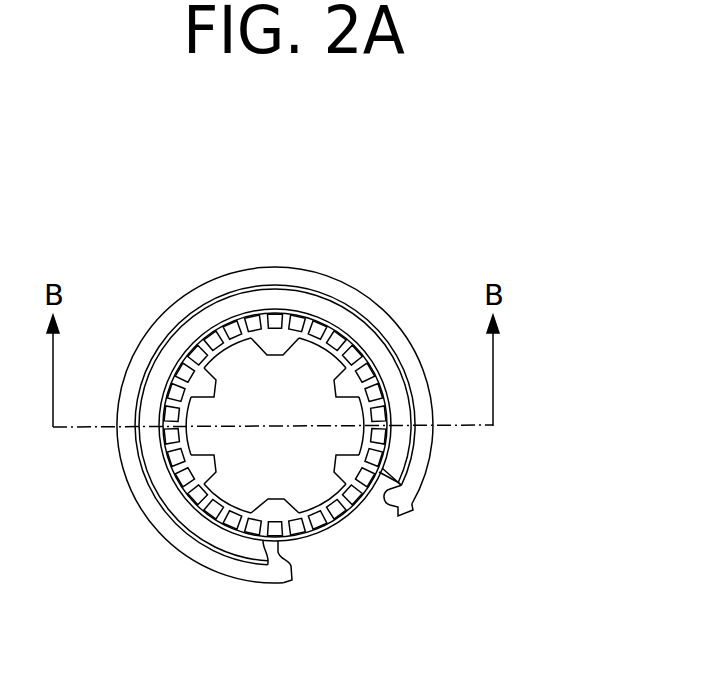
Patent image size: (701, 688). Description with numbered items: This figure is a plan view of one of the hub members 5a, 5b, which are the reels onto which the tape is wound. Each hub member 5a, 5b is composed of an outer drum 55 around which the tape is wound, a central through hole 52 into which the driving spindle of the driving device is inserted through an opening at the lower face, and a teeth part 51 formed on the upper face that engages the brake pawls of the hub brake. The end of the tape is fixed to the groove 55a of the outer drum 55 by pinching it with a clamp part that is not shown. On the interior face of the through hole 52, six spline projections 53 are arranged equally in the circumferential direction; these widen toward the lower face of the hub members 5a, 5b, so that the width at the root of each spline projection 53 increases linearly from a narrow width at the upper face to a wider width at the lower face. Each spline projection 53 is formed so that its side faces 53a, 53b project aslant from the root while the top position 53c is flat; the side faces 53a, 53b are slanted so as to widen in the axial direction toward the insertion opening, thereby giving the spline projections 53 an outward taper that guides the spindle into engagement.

The hub member 5a is at (432, 208).
The hub member 5b is at (300, 414).
The teeth part 51 is at (196, 338).
The through hole 52 is at (258, 417).
The spline projections 53 is at (259, 338).
The side face 53a is at (241, 338).
The side face 53b is at (318, 340).
The top position 53c is at (336, 455).
The outer drum 55 is at (331, 279).
The groove 55a is at (373, 510).